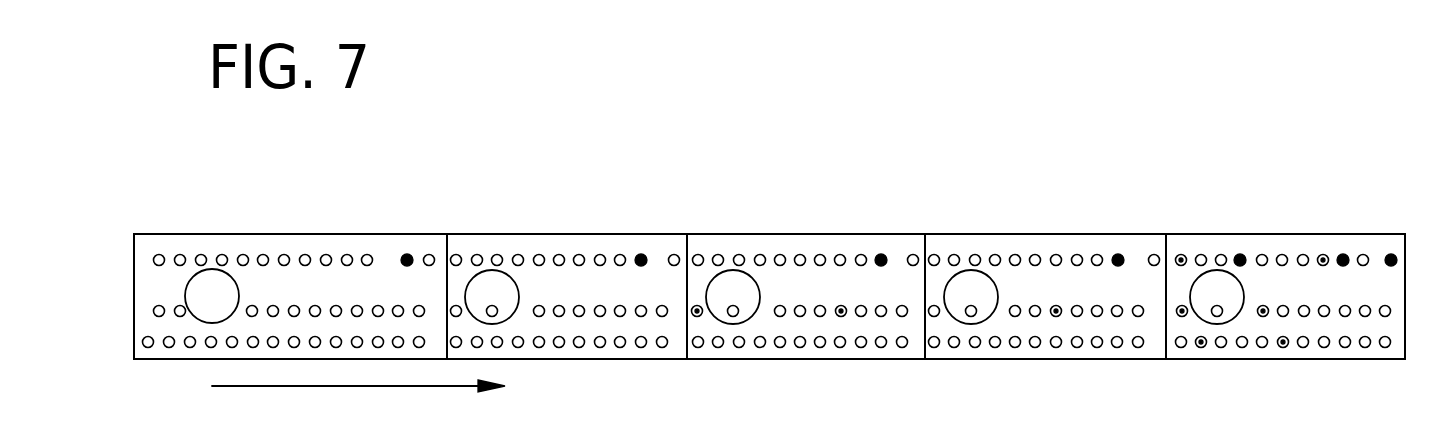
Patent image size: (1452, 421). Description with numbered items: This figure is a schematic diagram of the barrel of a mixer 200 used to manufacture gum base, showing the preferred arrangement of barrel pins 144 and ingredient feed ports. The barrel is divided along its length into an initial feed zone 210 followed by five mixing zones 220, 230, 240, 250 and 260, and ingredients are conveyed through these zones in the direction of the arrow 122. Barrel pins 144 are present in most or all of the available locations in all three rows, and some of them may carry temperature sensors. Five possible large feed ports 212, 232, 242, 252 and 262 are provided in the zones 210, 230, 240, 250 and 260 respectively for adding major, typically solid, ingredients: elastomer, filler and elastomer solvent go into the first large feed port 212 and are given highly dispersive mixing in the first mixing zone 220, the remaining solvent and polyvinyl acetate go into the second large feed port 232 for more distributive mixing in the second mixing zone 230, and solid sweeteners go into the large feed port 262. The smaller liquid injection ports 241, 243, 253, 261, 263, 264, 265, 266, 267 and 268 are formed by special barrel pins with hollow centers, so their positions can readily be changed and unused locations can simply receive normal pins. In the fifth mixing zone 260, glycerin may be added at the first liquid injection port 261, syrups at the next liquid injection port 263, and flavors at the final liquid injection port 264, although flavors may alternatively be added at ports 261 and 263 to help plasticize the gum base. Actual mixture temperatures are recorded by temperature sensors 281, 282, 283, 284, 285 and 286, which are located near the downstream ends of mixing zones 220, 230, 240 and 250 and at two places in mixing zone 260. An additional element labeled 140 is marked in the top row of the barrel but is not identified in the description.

The arrow 122 is at (358, 399).
The hole 140 is at (899, 255).
The barrel pins 144 is at (843, 255).
The mixer 200 is at (1339, 233).
The initial feed zone 210 is at (228, 233).
The first large feed port 212 is at (219, 303).
The first mixing zone 220 is at (378, 233).
The second mixing zone 230 is at (555, 233).
The second large feed port 232 is at (503, 299).
The third mixing zone 240 is at (750, 233).
The liquid injection port 241 is at (694, 306).
The large feed port 242 is at (745, 298).
The liquid injection port 243 is at (843, 305).
The fourth mixing zone 250 is at (1068, 233).
The large feed port 252 is at (983, 298).
The liquid injection port 253 is at (1055, 317).
The fifth mixing zone 260 is at (1222, 233).
The first liquid injection port 261 is at (1180, 305).
The large feed port 262 is at (1225, 298).
The liquid injection port 263 is at (1262, 317).
The final liquid injection port 264 is at (1323, 266).
The liquid injection port 265 is at (1181, 254).
The liquid injection port 266 is at (1243, 256).
The liquid injection port 267 is at (1200, 348).
The liquid injection port 268 is at (1285, 348).
The temperature sensor 281 is at (408, 256).
The temperature sensor 282 is at (642, 256).
The temperature sensor 283 is at (881, 255).
The temperature sensor 284 is at (1119, 256).
The temperature sensor 285 is at (1346, 256).
The temperature sensor 286 is at (1396, 260).